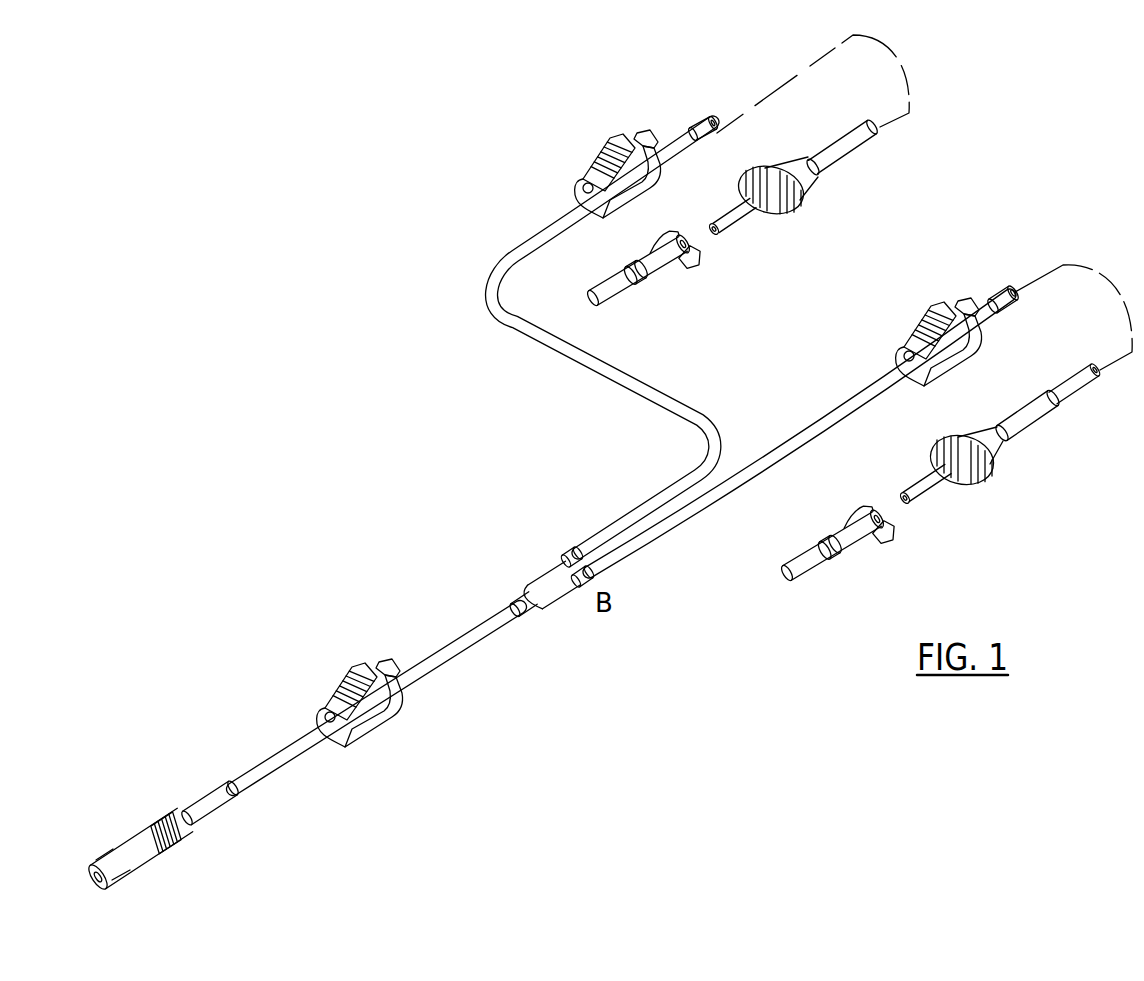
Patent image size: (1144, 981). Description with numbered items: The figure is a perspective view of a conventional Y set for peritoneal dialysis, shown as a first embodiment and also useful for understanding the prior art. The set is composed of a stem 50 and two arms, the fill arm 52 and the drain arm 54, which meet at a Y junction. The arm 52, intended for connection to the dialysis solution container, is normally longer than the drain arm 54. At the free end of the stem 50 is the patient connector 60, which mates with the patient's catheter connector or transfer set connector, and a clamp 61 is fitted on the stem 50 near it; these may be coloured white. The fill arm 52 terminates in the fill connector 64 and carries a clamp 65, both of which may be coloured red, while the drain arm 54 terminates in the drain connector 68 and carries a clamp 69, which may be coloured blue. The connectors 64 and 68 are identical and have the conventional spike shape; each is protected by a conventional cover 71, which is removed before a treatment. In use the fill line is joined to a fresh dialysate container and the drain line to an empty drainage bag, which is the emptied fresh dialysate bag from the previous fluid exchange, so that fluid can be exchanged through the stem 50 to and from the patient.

The stem 50 is at (305, 750).
The arm 52 is at (526, 242).
The drain arm 54 is at (795, 436).
The patient connector 60 is at (162, 824).
The clamp 61 is at (340, 690).
The fill connector 64 is at (784, 214).
The clamp 65 is at (597, 162).
The drain connector 68 is at (936, 446).
The clamp 69 is at (918, 326).
The cover 71 is at (633, 287).